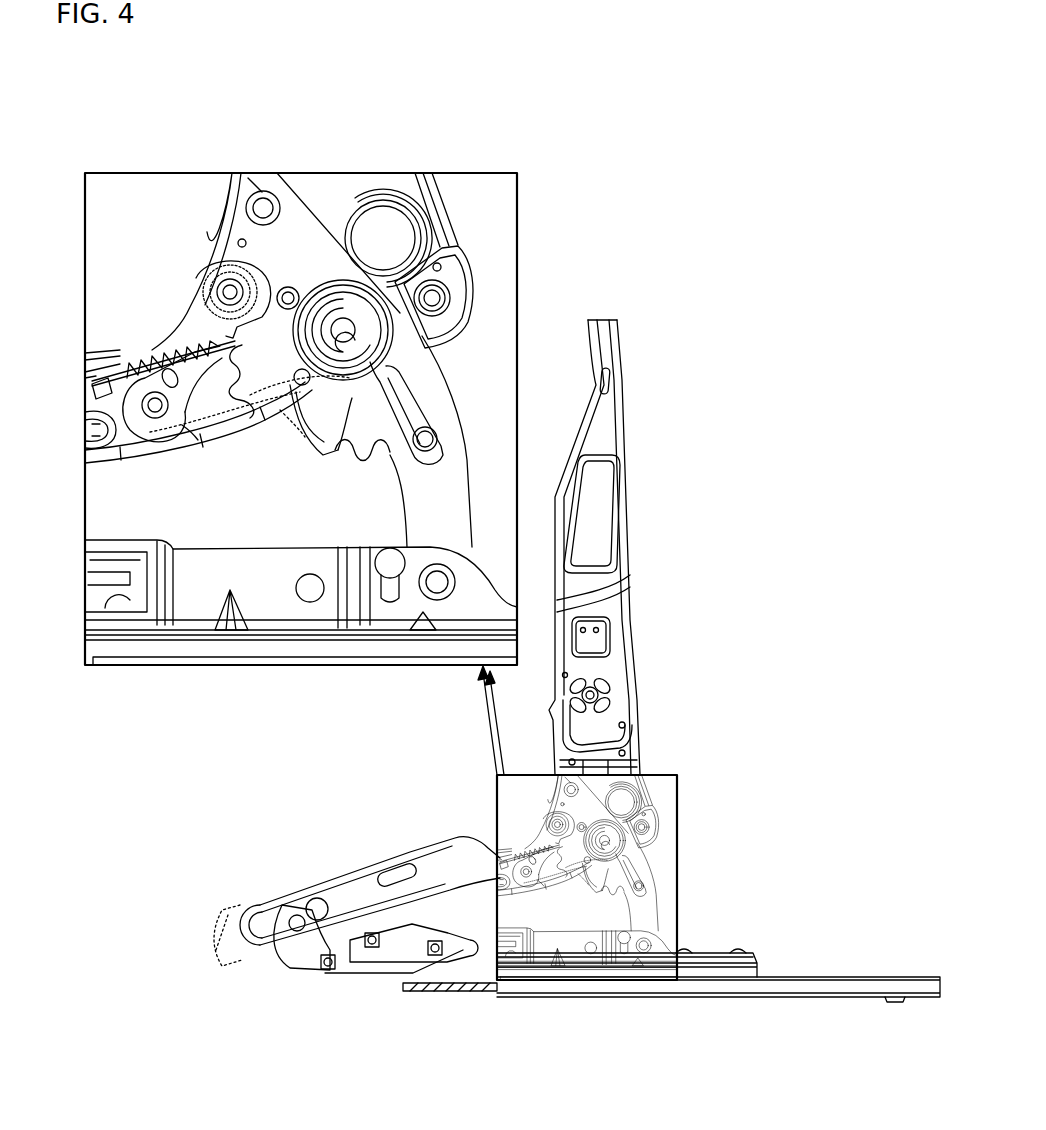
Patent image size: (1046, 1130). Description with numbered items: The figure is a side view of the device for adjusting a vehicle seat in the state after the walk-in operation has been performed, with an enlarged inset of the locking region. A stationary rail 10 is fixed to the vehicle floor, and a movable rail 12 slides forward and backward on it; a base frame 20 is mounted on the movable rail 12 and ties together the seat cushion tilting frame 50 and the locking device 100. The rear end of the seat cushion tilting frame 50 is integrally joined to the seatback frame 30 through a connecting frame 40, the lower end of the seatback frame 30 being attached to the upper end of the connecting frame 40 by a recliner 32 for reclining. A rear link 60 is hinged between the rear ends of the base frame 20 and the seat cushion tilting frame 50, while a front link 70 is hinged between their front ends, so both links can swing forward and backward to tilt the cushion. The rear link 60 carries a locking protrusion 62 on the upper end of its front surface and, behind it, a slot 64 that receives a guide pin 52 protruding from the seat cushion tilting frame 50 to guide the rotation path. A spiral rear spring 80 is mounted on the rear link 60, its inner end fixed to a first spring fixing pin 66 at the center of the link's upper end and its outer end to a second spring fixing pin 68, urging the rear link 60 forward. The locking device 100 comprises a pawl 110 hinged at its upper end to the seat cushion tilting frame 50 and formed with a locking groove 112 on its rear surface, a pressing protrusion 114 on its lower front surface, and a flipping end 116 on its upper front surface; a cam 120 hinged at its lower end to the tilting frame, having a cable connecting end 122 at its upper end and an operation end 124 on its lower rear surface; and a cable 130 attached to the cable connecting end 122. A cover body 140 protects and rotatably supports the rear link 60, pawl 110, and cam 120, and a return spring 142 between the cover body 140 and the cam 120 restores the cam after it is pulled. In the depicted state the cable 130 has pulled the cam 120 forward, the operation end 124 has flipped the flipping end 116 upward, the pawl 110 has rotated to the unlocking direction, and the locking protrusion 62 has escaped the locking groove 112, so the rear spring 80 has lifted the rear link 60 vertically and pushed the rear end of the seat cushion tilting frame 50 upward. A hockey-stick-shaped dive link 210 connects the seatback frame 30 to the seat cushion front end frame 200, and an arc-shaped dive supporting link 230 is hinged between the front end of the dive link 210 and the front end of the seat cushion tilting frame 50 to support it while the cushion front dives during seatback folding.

The stationary rail 10 is at (693, 1000).
The movable rail 12 is at (740, 978).
The base frame 20 is at (268, 610).
The seatback frame 30 is at (625, 637).
The recliner 32 is at (605, 693).
The connecting frame 40 is at (440, 205).
The seat cushion tilting frame 50 is at (238, 215).
The guide pin 52 is at (300, 428).
The rear link 60 is at (447, 377).
The locking protrusion 62 is at (348, 462).
The slot 64 is at (340, 462).
The first spring fixing pin 66 is at (445, 268).
The second spring fixing pin 68 is at (440, 432).
The front link 70 is at (393, 948).
The rear spring 80 is at (476, 300).
The locking device 100 is at (167, 264).
The pawl 110 is at (179, 320).
The locking groove 112 is at (240, 412).
The pressing protrusion 114 is at (190, 437).
The flipping end 116 is at (172, 342).
The cam 120 is at (102, 360).
The cable connecting end 122 is at (108, 458).
The operation end 124 is at (177, 430).
The cable 130 is at (89, 390).
The cover body 140 is at (300, 255).
The return spring 142 is at (250, 200).
The seat cushion front end frame 200 is at (228, 925).
The dive link 210 is at (467, 850).
The dive supporting link 230 is at (298, 962).